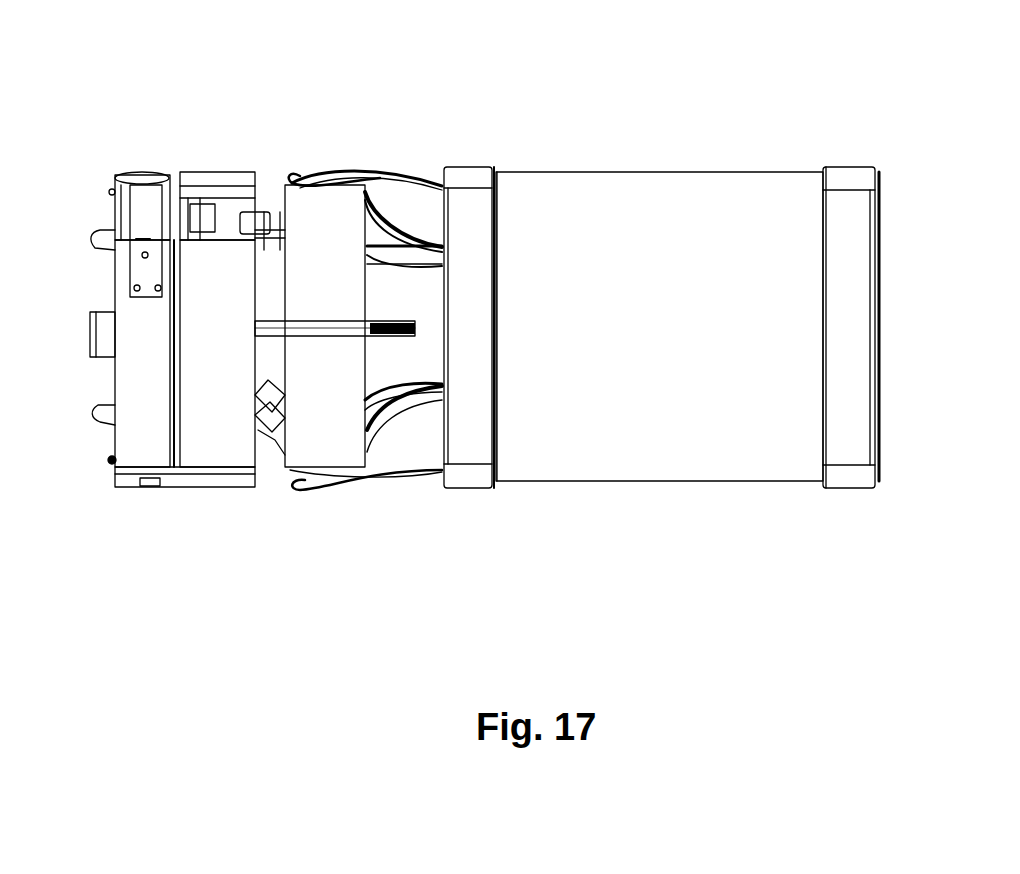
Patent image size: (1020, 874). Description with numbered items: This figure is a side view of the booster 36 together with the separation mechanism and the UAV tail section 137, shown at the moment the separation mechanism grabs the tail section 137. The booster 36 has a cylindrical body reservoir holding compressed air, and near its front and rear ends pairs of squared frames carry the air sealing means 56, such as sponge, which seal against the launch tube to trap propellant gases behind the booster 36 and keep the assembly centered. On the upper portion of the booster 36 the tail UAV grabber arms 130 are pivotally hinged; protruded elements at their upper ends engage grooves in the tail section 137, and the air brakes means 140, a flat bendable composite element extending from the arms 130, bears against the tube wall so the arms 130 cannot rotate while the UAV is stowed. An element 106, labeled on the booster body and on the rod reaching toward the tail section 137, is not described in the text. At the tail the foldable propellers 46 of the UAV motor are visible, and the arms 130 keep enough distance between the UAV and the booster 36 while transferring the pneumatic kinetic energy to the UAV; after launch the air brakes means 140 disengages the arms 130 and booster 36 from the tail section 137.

The booster 36 is at (567, 357).
The foldable propellers 46 is at (270, 440).
The air sealing means 56 is at (470, 490).
The tube 106 is at (622, 172).
The tail UAV grabber arms 130 is at (297, 172).
The tail section 137 is at (172, 140).
The air brakes means 140 is at (375, 170).